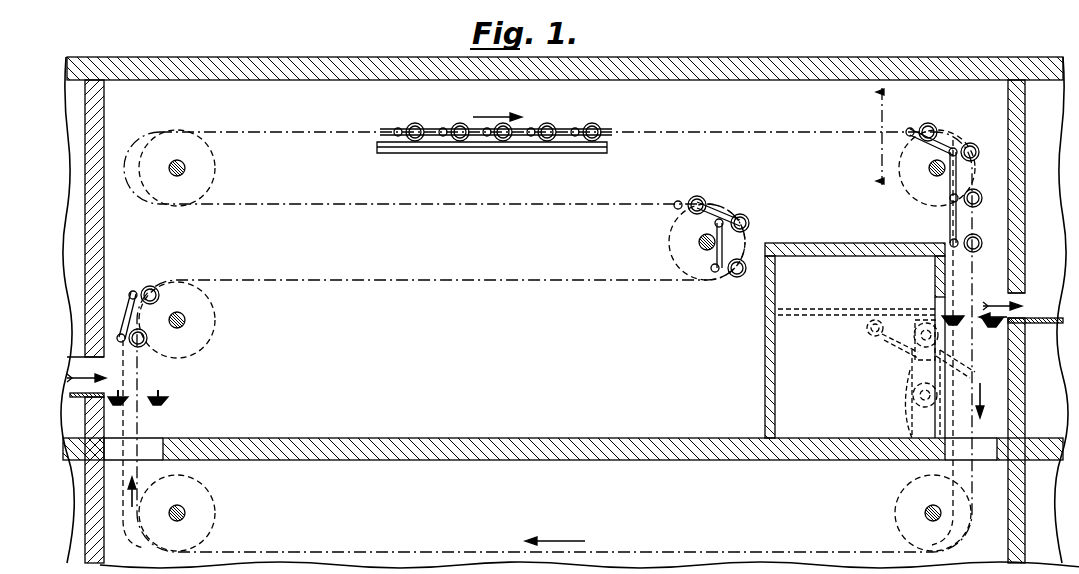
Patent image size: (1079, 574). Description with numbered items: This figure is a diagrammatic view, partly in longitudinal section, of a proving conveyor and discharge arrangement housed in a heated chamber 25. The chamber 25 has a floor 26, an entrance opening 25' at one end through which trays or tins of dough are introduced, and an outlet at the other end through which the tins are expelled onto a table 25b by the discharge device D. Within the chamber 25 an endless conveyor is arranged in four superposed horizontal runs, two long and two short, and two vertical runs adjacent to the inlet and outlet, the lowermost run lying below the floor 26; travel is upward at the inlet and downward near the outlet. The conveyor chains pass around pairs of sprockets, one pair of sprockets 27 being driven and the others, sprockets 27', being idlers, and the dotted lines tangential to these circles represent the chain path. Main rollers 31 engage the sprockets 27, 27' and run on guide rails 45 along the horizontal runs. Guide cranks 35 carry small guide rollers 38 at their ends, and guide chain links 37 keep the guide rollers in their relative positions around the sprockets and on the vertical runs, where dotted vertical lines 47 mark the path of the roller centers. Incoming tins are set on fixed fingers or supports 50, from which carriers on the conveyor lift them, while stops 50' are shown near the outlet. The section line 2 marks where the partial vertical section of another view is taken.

The chamber 25 is at (570, 295).
The entrance opening 25' is at (63, 377).
The table 25b is at (1044, 323).
The floor 26 is at (239, 442).
The driven sprocket 27 is at (945, 155).
The idler sprocket 27' is at (555, 340).
The main roller 31 is at (548, 128).
The guide crank 35 is at (406, 124).
The guide chain link 37 is at (596, 128).
The guide roller 38 is at (575, 137).
The guide rail 45 is at (478, 146).
The vertical path of guide roller centers 47 is at (955, 271).
The fixed fingers or supports 50 is at (151, 384).
The stops 50' is at (974, 334).
The section line 2— 2 is at (886, 143).
The discharge device D is at (870, 340).